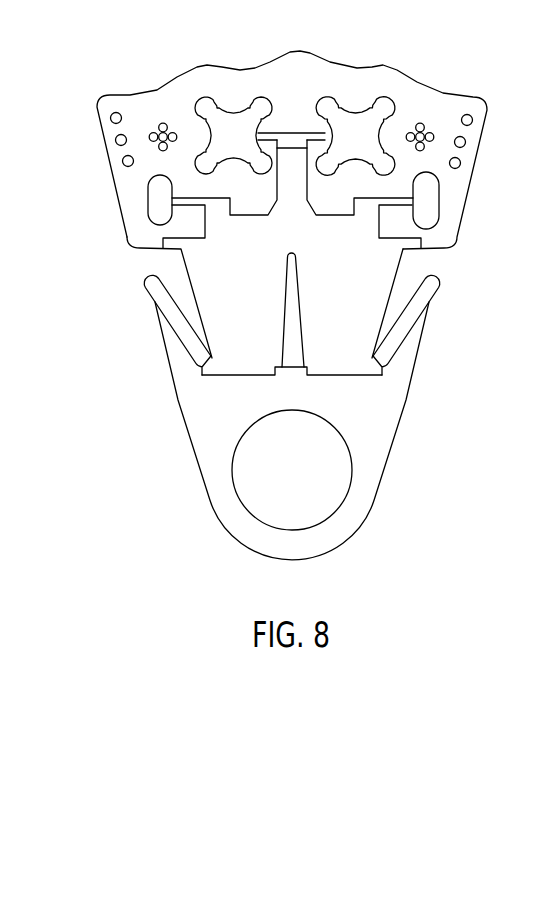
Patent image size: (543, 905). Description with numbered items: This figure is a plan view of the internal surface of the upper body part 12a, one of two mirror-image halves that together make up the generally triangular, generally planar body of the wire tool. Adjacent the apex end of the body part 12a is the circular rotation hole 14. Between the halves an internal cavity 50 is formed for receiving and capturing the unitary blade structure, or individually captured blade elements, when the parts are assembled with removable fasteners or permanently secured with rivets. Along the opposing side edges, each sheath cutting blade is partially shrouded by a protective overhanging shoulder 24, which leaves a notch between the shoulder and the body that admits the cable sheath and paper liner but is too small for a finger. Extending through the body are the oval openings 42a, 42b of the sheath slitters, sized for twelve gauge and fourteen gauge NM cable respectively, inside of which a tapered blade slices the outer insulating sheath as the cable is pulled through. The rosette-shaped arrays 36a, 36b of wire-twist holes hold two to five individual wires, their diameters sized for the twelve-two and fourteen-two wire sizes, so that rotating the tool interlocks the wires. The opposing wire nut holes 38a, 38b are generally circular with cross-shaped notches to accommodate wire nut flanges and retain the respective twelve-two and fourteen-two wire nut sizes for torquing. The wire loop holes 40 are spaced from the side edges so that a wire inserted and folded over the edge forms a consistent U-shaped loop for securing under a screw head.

The upper body part 12a is at (187, 430).
The circular rotation hole 14 is at (236, 497).
The protective overhanging shoulder 24 is at (155, 302).
The rosette-shaped array of wire-twist holes 36a is at (163, 123).
The rosette-shaped array of wire-twist holes 36b is at (420, 123).
The wire nut hole 38a is at (232, 110).
The wire nut hole 38b is at (355, 110).
The wire loop holes 40 is at (110, 118).
The oval opening 42a is at (147, 200).
The oval opening 42b is at (440, 207).
The internal cavity 50 is at (340, 325).